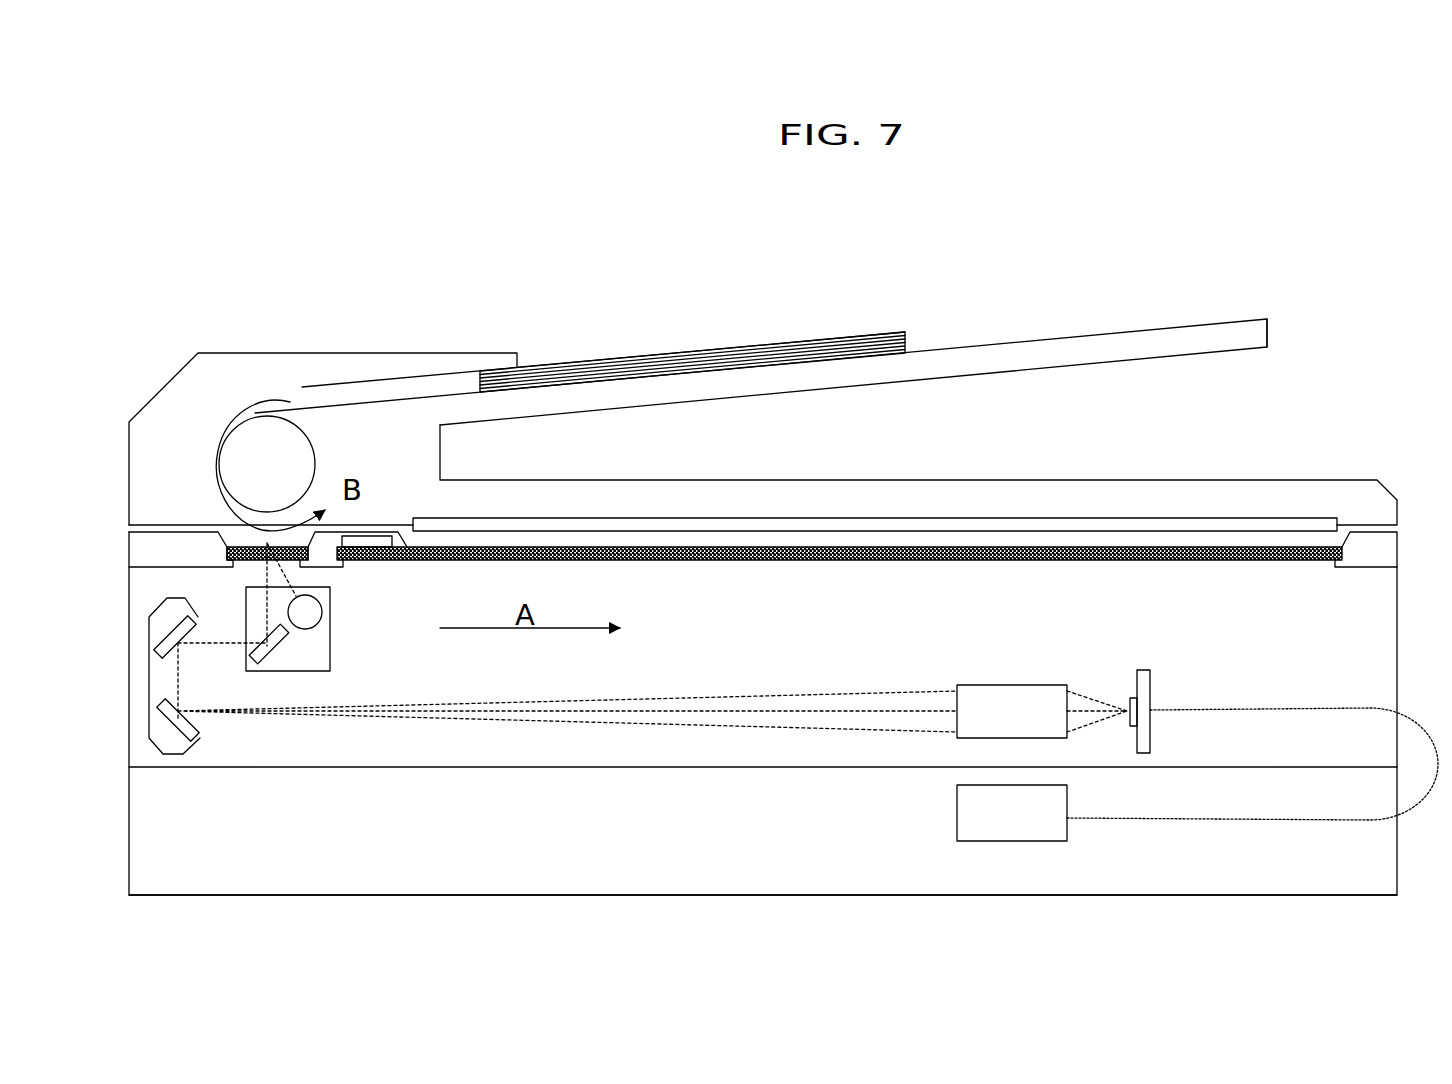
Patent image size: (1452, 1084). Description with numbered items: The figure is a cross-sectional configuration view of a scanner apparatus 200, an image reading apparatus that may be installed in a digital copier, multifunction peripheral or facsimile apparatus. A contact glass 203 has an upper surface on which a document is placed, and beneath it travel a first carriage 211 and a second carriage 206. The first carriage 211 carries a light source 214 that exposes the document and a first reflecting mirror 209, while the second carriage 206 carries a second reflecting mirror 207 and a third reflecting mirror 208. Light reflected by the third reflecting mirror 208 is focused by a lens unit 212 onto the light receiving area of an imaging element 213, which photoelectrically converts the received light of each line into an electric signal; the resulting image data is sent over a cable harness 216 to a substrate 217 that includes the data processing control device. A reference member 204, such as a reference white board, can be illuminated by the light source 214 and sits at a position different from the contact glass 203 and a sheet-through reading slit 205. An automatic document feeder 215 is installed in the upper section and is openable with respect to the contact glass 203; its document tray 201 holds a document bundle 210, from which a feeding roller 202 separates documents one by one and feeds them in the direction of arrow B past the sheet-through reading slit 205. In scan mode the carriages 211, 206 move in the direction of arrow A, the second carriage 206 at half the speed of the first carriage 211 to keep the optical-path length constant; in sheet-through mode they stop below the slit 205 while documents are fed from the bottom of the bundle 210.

The scanner apparatus 200 is at (1350, 375).
The document tray 201 is at (975, 343).
The feeding roller 202 is at (315, 465).
The contact glass 203 is at (795, 561).
The reference member 204 is at (382, 543).
The sheet-through reading slit 205 is at (230, 537).
The second carriage 206 is at (170, 597).
The second reflecting mirror 207 is at (183, 640).
The third reflecting mirror 208 is at (198, 730).
The first reflecting mirror 209 is at (263, 662).
The document bundle 210 is at (846, 318).
The first carriage 211 is at (330, 652).
The lens unit 212 is at (990, 685).
The imaging element 213 is at (1130, 700).
The light source 214 is at (322, 612).
The automatic document feeder (ADF) 215 is at (1262, 290).
The cable harness 216 is at (1280, 820).
The substrate 217 is at (957, 818).